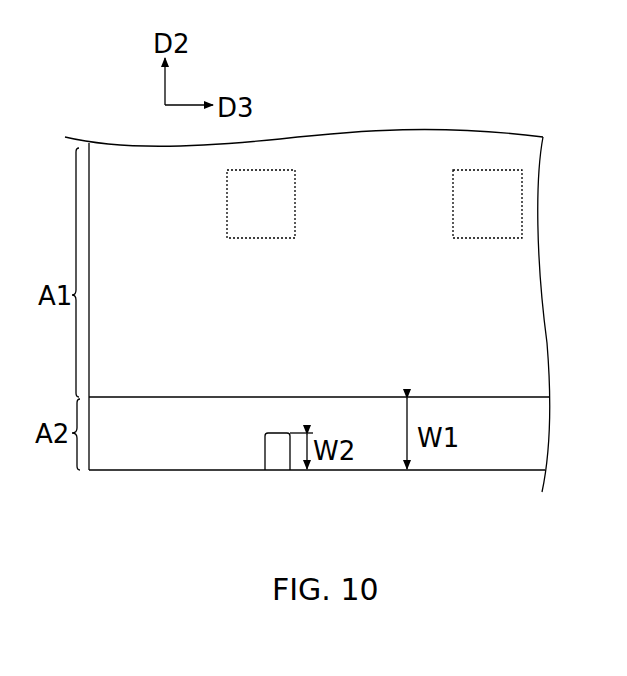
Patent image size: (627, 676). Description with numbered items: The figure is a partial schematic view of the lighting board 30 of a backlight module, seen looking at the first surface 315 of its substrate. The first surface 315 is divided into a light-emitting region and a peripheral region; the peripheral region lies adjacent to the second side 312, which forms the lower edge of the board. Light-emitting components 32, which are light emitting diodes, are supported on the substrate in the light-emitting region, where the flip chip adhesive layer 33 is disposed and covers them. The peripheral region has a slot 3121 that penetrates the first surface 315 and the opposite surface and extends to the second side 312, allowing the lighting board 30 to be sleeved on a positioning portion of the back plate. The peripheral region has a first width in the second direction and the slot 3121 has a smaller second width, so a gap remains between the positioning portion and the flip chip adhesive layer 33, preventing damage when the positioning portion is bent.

The lighting board 30 is at (334, 165).
The light-emitting components 32 is at (496, 208).
The flip chip adhesive layer 33 is at (497, 270).
The first surface 315 is at (543, 437).
The second side 312 is at (165, 470).
The slot 3121 is at (277, 458).